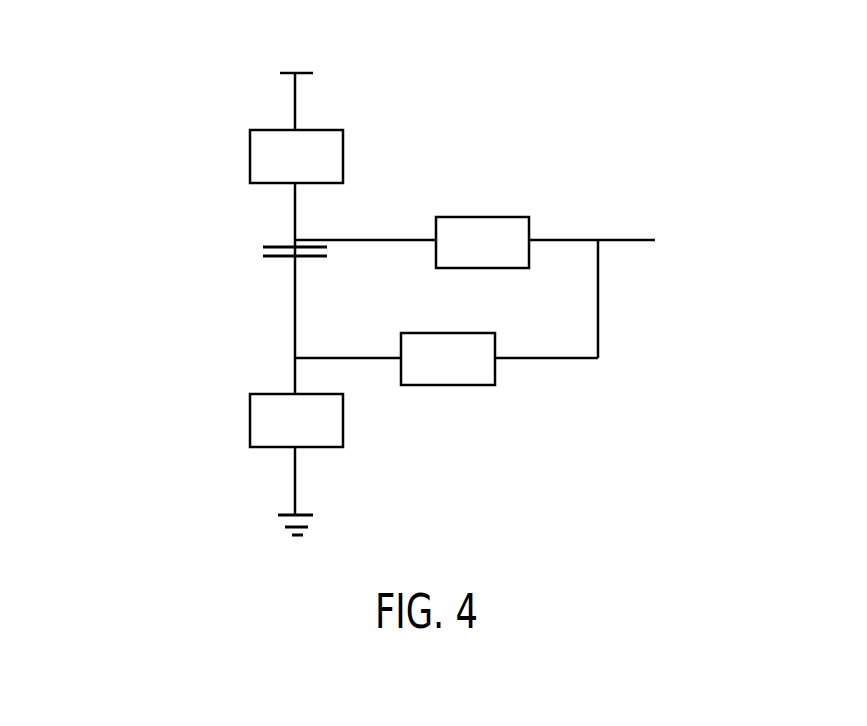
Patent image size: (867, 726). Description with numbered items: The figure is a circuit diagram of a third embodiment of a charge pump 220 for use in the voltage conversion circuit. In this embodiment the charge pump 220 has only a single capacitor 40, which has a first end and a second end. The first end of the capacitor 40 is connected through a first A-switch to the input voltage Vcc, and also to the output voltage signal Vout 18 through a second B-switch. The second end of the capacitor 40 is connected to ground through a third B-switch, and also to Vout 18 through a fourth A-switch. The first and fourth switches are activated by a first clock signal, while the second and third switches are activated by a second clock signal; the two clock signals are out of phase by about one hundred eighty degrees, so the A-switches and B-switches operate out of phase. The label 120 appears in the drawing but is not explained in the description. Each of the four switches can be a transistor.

The charge pump 220 is at (150, 240).
The capacitor 40 is at (283, 256).
The switch network 120 is at (610, 428).
The output voltage signal Vout 18 is at (645, 242).